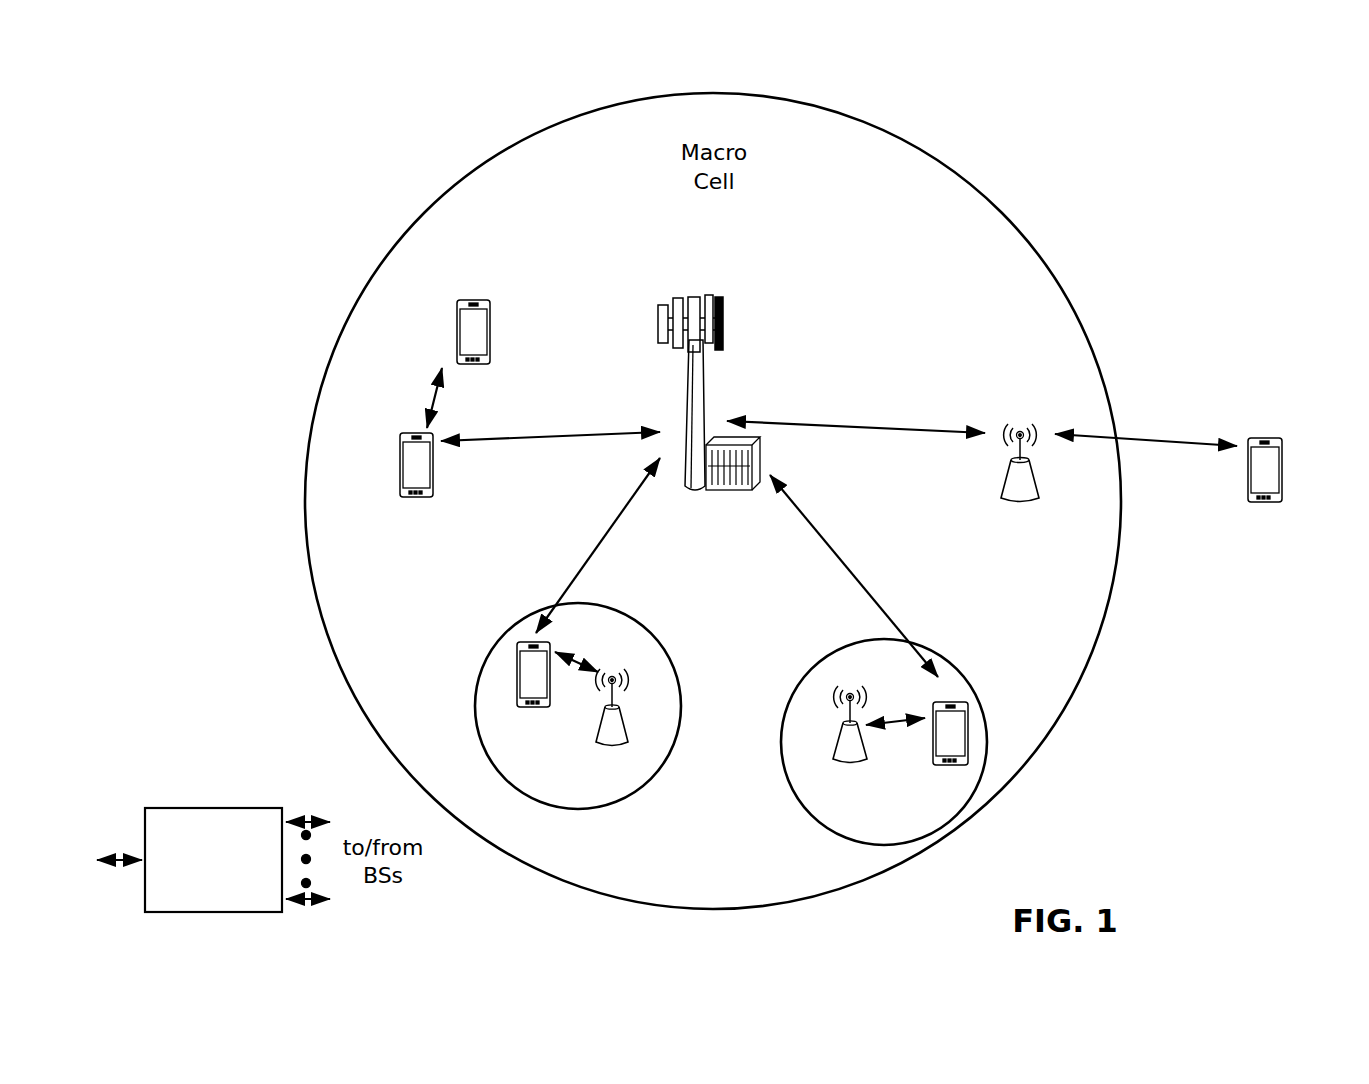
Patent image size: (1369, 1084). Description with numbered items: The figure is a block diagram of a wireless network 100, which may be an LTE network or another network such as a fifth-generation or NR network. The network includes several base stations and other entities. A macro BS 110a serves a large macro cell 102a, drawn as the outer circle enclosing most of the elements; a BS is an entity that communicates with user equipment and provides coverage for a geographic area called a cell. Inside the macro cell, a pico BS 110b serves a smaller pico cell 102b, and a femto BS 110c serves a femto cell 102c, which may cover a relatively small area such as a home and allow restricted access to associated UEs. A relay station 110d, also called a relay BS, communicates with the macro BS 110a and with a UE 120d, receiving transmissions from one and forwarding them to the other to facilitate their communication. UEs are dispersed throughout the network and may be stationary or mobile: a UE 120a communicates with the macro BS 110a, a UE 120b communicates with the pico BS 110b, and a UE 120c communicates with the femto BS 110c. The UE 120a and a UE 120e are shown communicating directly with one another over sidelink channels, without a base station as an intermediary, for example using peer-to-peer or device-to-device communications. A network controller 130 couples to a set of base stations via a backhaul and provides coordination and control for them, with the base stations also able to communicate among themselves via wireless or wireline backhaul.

The wireless network 100 is at (196, 88).
The macro cell 102a is at (988, 190).
The pico cell 102b is at (667, 648).
The femto cell 102c is at (822, 658).
The macro BS 110a is at (702, 286).
The pico BS 110b is at (634, 736).
The femto BS 110c is at (826, 758).
The relay station 110d is at (1022, 424).
The UE 120a is at (398, 460).
The UE 120b is at (525, 708).
The UE 120c is at (940, 766).
The UE 120d is at (1282, 434).
The UE 120e is at (456, 316).
The network controller 130 is at (212, 806).